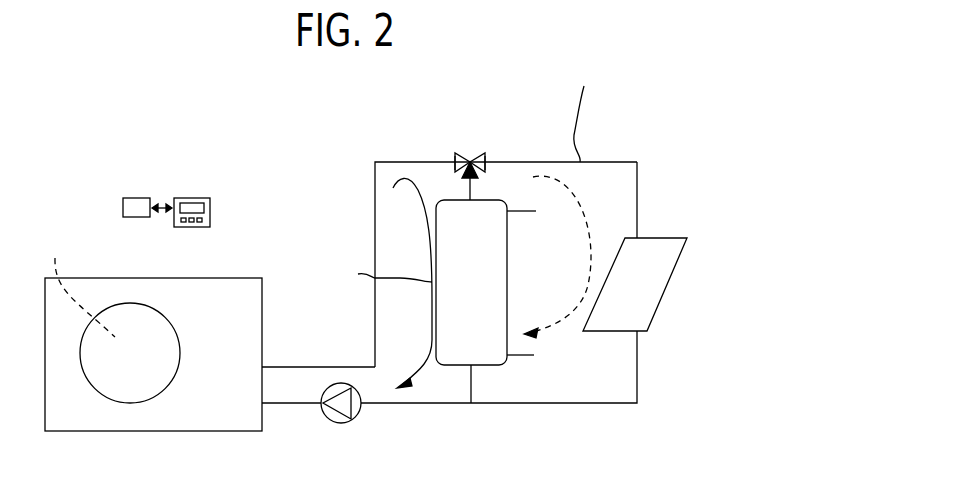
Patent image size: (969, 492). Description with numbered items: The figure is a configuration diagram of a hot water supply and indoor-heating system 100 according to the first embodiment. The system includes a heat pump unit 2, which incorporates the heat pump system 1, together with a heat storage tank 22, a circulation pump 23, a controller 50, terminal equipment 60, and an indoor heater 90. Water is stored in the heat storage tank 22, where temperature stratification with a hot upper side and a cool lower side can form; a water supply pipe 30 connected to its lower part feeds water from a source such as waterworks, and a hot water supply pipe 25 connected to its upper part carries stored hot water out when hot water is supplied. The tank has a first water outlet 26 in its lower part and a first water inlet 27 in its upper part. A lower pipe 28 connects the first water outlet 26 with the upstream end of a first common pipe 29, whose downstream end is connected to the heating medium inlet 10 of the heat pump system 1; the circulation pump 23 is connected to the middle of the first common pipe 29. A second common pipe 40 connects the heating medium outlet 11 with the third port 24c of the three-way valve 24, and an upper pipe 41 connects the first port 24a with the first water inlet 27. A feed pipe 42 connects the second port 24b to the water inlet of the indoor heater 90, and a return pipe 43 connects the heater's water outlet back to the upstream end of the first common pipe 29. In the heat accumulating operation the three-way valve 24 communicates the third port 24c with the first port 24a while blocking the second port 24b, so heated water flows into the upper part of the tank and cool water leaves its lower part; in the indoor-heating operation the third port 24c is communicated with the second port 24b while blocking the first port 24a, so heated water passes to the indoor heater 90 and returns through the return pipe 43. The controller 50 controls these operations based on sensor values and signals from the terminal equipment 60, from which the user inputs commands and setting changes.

The hot water supply and indoor-heating system 100 is at (307, 203).
The heat pump system 1 is at (82, 283).
The heat pump unit 2 is at (187, 278).
The heating medium inlet 10 is at (263, 403).
The heating medium outlet 11 is at (262, 367).
The heat storage tank 22 is at (507, 290).
The circulation pump 23 is at (355, 417).
The three-way valve 24 is at (470, 153).
The first port 24a is at (476, 178).
The second port 24b is at (485, 158).
The third port 24c is at (455, 158).
The hot water supply pipe 25 is at (537, 223).
The first water outlet 26 is at (473, 367).
The first water inlet 27 is at (464, 197).
The lower pipe 28 is at (470, 385).
The first common pipe 29 is at (447, 405).
The water supply pipe 30 is at (535, 350).
The second common pipe 40 is at (375, 305).
The upper pipe 41 is at (460, 198).
The feed pipe 42 is at (612, 162).
The return pipe 43 is at (602, 405).
The controller 50 is at (133, 197).
The terminal equipment 60 is at (191, 197).
The indoor heater 90 is at (644, 238).